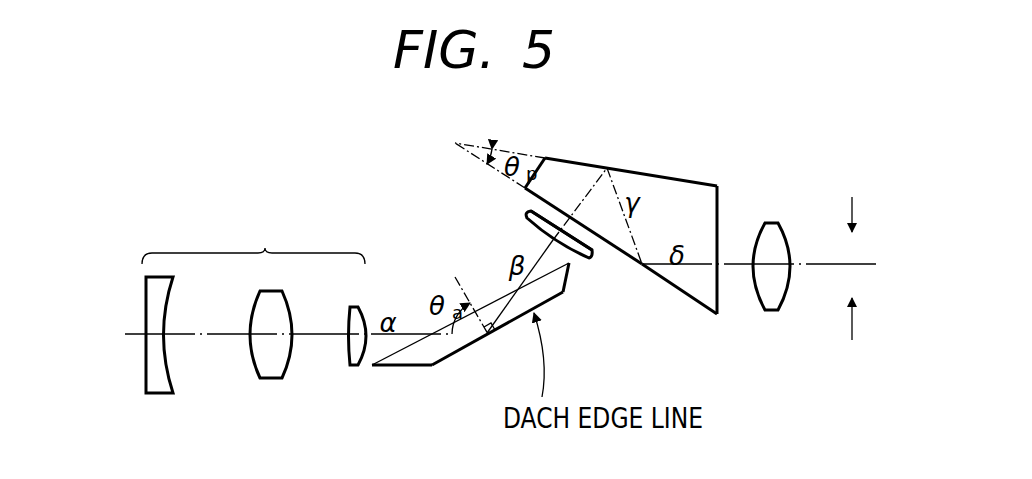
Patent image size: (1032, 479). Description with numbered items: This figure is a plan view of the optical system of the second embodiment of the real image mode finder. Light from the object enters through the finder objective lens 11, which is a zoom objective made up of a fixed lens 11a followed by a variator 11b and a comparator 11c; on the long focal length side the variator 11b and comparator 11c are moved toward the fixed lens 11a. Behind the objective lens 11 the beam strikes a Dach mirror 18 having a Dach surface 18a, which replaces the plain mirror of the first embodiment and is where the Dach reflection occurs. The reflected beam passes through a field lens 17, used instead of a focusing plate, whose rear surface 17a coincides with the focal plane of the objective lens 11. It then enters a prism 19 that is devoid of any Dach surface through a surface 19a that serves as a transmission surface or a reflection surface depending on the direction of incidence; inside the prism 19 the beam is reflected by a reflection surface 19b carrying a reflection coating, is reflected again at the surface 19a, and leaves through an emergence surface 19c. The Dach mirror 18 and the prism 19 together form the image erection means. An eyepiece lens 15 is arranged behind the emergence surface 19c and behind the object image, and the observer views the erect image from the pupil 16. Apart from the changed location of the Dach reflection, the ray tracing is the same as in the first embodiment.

The finder objective lens 11 is at (263, 330).
The fixed lens 11a is at (157, 386).
The variator 11b is at (272, 379).
The comparator 11c is at (352, 366).
The eyepiece lens 15 is at (757, 304).
The pupil 16 is at (853, 210).
The field lens 17 is at (523, 218).
The rear surface 17a is at (530, 209).
The Dach mirror 18 is at (486, 330).
The Dach surface 18a is at (453, 353).
The prism 19 is at (650, 236).
The surface 19a is at (620, 252).
The reflection surface 19b is at (572, 158).
The emergence surface 19c is at (718, 202).